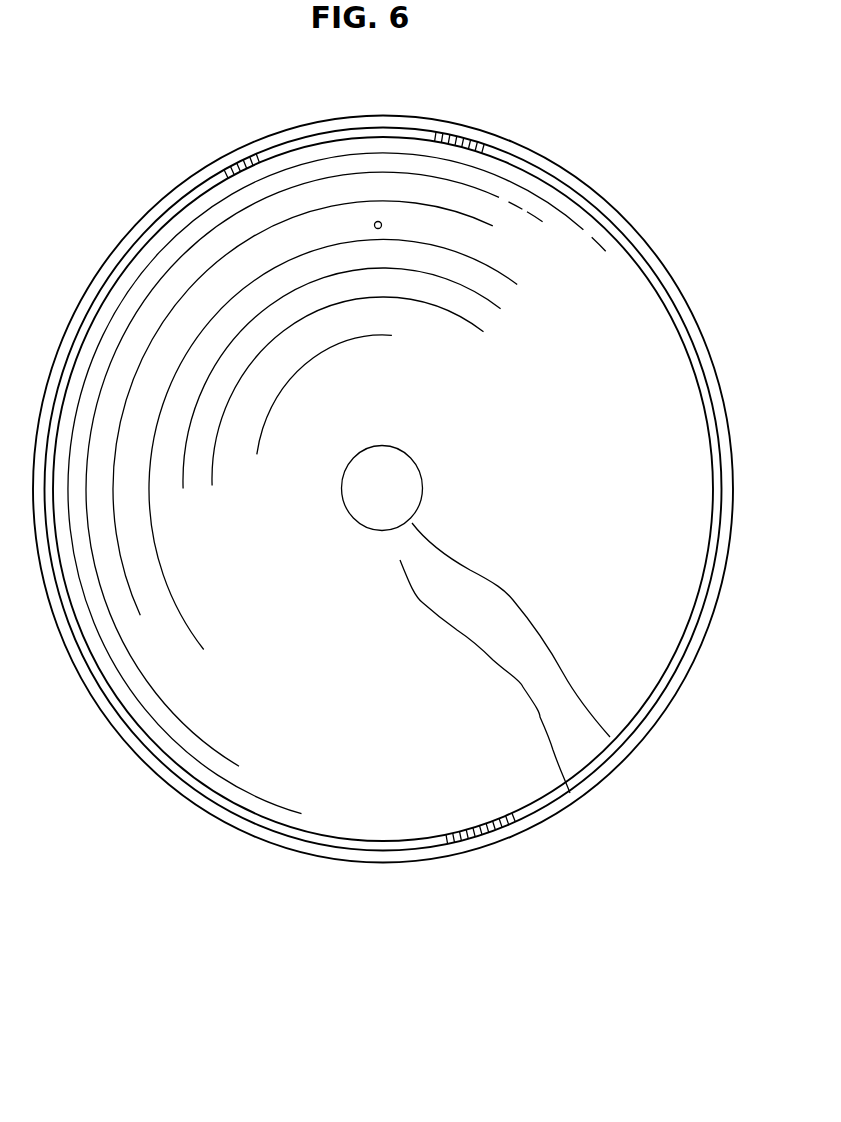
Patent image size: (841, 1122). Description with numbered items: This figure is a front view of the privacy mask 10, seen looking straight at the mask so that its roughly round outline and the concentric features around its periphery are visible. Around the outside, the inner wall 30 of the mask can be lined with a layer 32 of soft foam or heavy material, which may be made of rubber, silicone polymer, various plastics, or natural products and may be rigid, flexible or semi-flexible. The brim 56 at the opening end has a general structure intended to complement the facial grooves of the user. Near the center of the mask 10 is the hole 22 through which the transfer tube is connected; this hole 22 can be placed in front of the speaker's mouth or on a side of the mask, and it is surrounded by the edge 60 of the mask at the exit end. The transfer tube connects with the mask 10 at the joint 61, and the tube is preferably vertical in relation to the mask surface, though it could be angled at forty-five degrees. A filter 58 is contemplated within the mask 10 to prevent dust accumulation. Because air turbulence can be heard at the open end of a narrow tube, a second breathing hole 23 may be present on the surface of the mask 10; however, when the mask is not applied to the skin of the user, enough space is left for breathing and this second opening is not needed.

The mask 10 is at (555, 162).
The layer 32 is at (613, 226).
The inner wall 30 is at (648, 345).
The brim 56 is at (398, 863).
The edge 60 is at (342, 487).
The hole 22 is at (361, 484).
The second breathing hole 23 is at (371, 225).
The joint 61 is at (610, 737).
The filter 58 is at (570, 793).